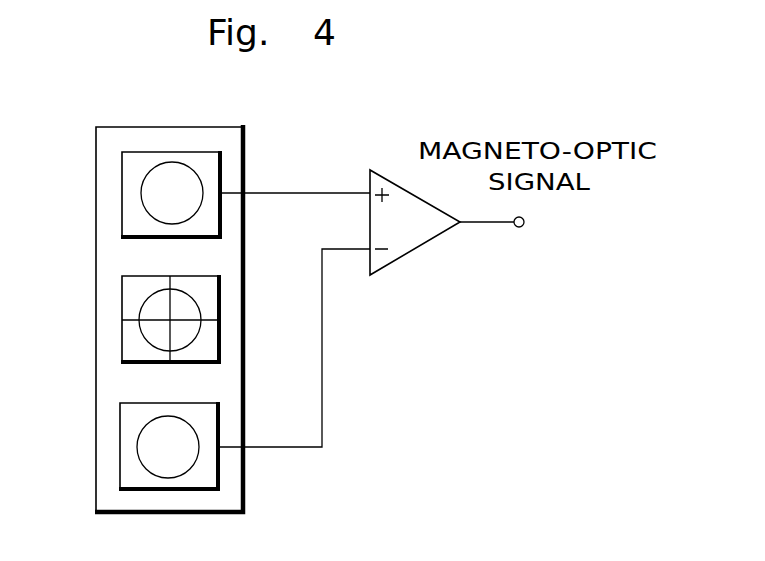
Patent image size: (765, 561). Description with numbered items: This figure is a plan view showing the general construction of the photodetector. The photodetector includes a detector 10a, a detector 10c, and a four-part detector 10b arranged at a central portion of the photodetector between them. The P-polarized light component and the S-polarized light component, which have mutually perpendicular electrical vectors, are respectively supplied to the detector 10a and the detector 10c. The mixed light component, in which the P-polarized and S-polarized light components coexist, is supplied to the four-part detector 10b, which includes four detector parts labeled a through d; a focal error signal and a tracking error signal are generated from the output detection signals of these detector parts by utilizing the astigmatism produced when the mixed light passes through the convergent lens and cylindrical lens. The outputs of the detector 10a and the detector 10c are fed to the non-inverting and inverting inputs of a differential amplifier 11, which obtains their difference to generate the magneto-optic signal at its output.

The detector 10a is at (122, 192).
The 4-part detector 10b is at (122, 300).
The detector 10c is at (120, 447).
The differential amplifier 11 is at (412, 250).